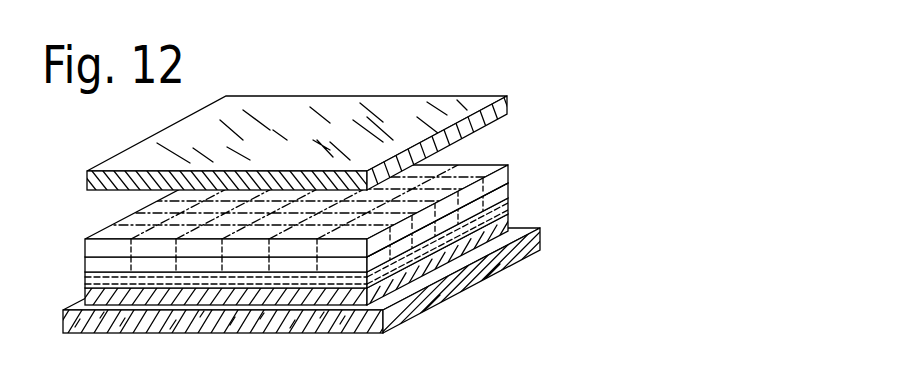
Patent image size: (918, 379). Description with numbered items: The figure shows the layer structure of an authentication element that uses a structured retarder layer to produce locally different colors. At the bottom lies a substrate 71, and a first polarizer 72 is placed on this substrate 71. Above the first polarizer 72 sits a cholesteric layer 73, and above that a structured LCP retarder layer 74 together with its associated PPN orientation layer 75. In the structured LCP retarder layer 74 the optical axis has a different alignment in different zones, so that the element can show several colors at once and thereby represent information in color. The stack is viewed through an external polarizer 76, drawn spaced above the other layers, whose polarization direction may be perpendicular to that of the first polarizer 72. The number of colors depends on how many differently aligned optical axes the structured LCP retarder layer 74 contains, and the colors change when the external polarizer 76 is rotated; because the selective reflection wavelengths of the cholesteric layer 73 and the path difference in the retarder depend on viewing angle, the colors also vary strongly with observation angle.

The substrate 71 is at (543, 240).
The first polarizer 72 is at (510, 221).
The cholesteric layer 73 is at (510, 207).
The structured LCP retarder layer 74 is at (510, 174).
The PPN orientation layer 75 is at (510, 190).
The external polarizer 76 is at (508, 105).